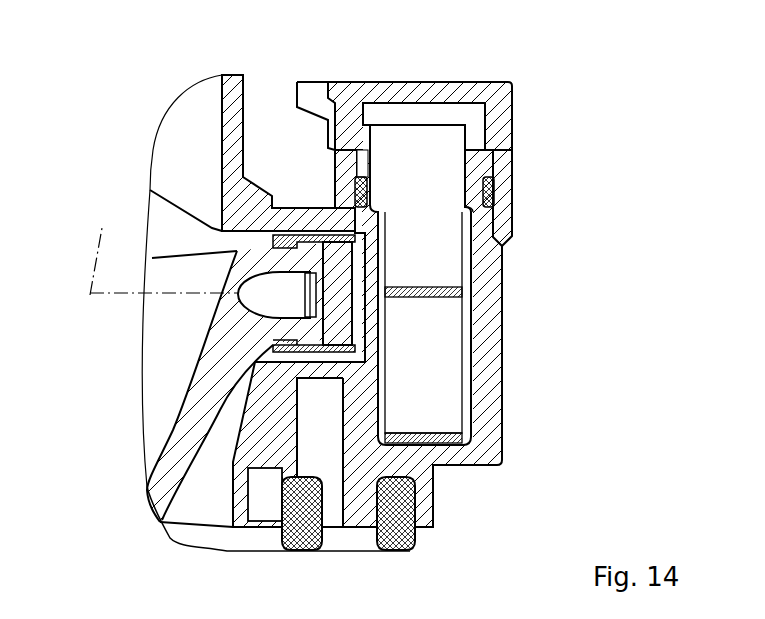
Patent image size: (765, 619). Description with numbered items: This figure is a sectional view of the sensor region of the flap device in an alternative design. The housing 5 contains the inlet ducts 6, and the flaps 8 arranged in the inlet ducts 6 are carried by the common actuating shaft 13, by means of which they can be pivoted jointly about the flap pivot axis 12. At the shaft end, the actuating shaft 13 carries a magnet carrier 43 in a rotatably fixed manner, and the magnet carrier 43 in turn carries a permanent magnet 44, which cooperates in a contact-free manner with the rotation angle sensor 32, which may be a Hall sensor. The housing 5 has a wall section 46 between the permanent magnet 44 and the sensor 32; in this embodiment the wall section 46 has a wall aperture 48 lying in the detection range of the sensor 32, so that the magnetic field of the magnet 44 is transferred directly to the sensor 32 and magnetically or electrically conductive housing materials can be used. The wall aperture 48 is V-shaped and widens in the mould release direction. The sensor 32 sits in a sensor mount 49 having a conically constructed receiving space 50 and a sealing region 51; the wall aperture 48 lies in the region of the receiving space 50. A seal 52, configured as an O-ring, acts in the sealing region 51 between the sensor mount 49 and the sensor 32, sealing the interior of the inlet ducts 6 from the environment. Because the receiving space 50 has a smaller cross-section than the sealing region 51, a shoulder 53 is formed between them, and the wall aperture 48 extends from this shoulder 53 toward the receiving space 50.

The housing 5 is at (415, 264).
The inlet duct 6 is at (187, 157).
The flap 8 is at (192, 483).
The flap pivot axis 12 is at (196, 245).
The actuating shaft 13 is at (230, 322).
The rotation angle sensor 32 is at (428, 84).
The magnet carrier 43 is at (303, 236).
The permanent magnet 44 is at (310, 252).
The wall section 46 is at (367, 340).
The wall aperture 48 is at (395, 262).
The sensor mount 49 is at (480, 298).
The receiving space 50 is at (462, 395).
The sealing region 51 is at (392, 112).
The seal 52 is at (507, 185).
The shoulder 53 is at (465, 213).